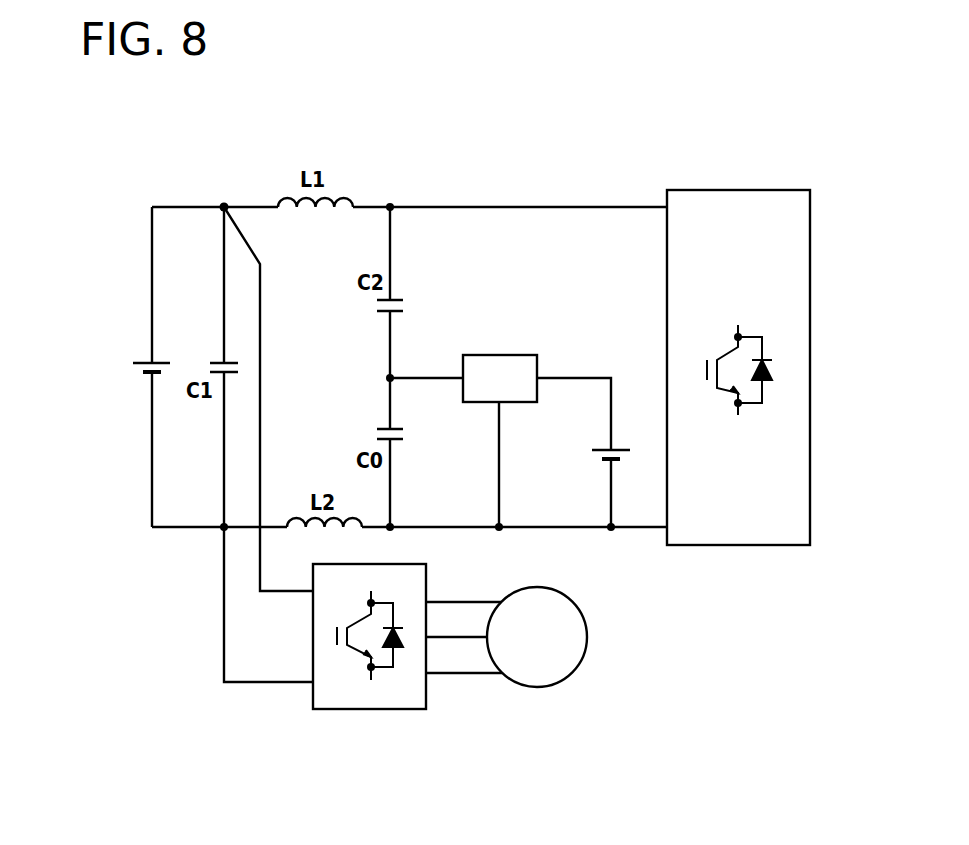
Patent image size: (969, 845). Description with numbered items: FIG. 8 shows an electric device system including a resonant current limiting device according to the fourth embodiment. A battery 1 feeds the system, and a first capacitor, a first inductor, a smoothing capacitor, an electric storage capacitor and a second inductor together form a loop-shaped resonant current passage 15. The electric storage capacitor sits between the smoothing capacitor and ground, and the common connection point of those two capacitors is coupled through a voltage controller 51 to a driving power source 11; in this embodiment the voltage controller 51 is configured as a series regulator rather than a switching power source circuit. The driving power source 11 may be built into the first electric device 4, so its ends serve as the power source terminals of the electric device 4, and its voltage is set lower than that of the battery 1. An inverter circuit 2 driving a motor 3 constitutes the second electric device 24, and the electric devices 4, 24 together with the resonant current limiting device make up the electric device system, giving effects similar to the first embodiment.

The battery 1 is at (134, 369).
The resonant current passage 15 is at (244, 187).
The voltage controller 51 is at (498, 355).
The driving power source 11 is at (596, 458).
The electric device 4 is at (742, 190).
The inverter circuit 2 is at (370, 710).
The electric device 24 is at (462, 695).
The motor 3 is at (588, 637).